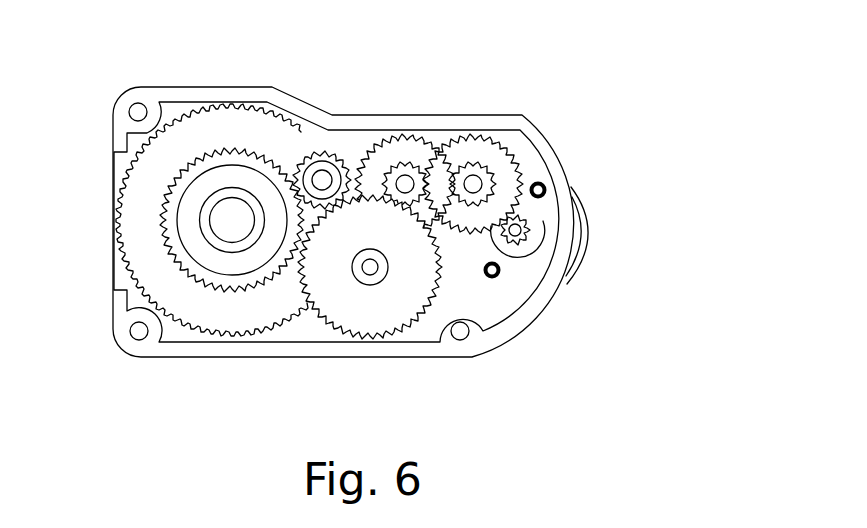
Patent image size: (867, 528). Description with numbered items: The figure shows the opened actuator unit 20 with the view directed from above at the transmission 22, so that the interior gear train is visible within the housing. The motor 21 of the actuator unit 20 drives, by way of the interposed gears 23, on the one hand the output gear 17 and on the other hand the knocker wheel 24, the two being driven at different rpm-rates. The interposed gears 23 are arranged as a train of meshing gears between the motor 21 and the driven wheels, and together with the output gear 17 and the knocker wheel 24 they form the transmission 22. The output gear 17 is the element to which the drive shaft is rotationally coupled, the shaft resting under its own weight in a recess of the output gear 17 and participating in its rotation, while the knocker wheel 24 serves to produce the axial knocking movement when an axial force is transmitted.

The output gear 17 is at (167, 265).
The actuator unit 20 is at (616, 116).
The motor 21 is at (583, 233).
The transmission 22 is at (312, 317).
The interposed gears 23 is at (477, 157).
The knocker wheel 24 is at (198, 216).